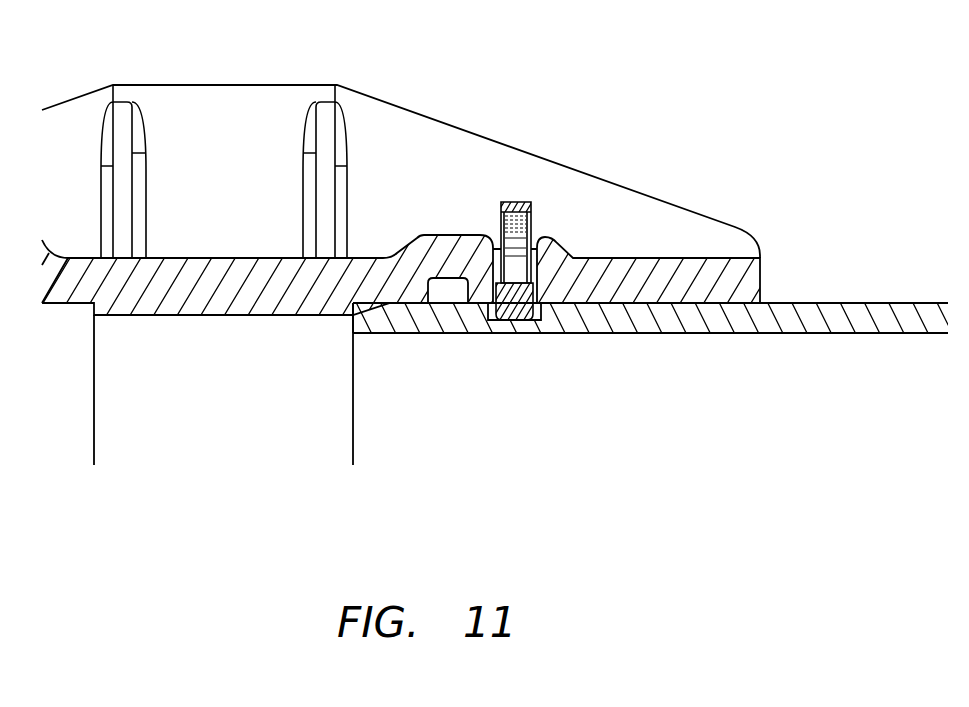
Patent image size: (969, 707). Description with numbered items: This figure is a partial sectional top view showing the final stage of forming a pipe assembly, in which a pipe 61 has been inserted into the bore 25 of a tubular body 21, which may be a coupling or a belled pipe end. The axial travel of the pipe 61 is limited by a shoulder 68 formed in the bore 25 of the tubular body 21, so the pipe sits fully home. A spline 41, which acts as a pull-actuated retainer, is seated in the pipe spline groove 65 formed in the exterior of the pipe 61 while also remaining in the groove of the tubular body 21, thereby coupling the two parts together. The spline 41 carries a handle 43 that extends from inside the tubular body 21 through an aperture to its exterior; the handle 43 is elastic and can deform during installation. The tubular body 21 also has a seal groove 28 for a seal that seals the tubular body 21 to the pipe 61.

The tubular body 21 is at (373, 105).
The shoulder 68 is at (358, 296).
The seal groove 28 is at (437, 277).
The pipe spline groove 65 is at (540, 299).
The bore 25 is at (670, 304).
The handle 43 is at (520, 202).
The spline 41 is at (538, 210).
The pipe 61 is at (847, 303).